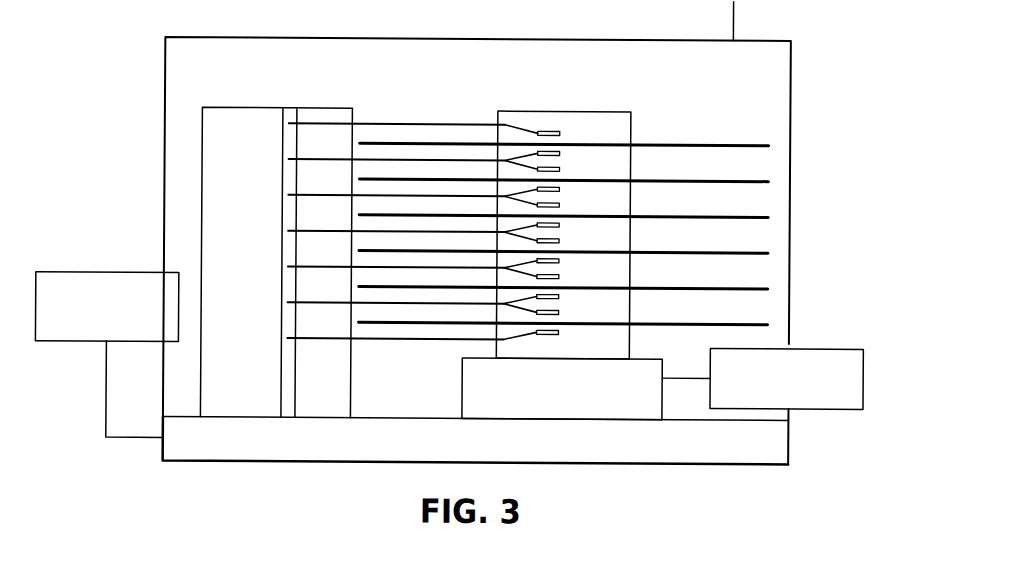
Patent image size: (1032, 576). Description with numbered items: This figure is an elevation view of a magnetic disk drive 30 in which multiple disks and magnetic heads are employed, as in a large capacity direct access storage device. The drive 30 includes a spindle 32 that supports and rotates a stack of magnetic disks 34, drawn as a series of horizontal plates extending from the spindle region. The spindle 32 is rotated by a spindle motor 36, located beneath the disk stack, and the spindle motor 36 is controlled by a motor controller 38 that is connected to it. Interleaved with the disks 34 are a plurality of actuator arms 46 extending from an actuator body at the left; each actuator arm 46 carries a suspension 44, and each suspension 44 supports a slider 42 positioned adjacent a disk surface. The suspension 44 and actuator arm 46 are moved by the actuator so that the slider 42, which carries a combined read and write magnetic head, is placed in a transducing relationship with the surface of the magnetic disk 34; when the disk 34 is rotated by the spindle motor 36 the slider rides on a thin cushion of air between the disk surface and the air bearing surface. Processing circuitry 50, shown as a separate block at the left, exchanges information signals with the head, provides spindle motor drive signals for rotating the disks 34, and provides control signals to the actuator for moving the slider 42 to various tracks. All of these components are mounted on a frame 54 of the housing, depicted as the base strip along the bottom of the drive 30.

The magnetic disk drive 30 is at (683, 114).
The spindle 32 is at (620, 111).
The magnetic disk 34 is at (763, 146).
The spindle motor 36 is at (550, 399).
The motor controller 38 is at (822, 407).
The slider 42 is at (580, 144).
The suspension 44 is at (531, 162).
The actuator arm 46 is at (466, 160).
The processing circuitry 50 is at (80, 274).
The frame 54 is at (216, 456).